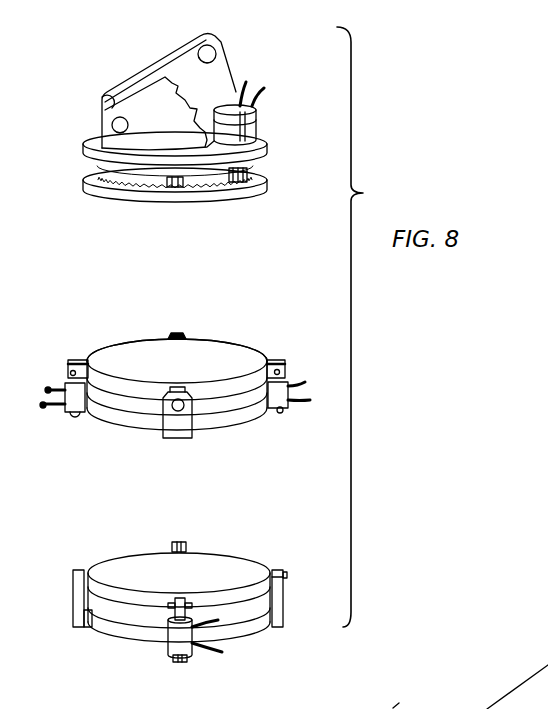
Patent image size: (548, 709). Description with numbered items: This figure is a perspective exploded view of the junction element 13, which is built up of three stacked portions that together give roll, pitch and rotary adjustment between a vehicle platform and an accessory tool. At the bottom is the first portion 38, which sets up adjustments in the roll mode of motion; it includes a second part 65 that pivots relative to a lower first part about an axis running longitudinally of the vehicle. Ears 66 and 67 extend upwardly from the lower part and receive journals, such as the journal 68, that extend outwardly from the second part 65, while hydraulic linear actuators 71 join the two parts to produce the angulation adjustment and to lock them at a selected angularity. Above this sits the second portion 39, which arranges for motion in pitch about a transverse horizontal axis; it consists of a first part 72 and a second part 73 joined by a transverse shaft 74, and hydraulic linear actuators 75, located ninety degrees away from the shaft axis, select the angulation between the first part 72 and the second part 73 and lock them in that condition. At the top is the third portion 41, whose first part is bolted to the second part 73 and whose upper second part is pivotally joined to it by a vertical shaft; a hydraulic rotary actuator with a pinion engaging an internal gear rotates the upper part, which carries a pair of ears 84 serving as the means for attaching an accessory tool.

The junction element 13 is at (366, 327).
The ears 84 is at (190, 63).
The third portion 41 is at (262, 139).
The second portion 39 is at (243, 362).
The second part 73 is at (220, 350).
The first part 72 is at (233, 420).
The latch clamp 74 is at (178, 408).
The hydraulic linear actuators 75 is at (73, 407).
The first portion 38 is at (225, 558).
The second part 65 is at (138, 600).
The ear 67 is at (73, 613).
The ear 66 is at (282, 607).
The journal 68 is at (288, 582).
The hydraulic linear actuators 71 is at (175, 643).